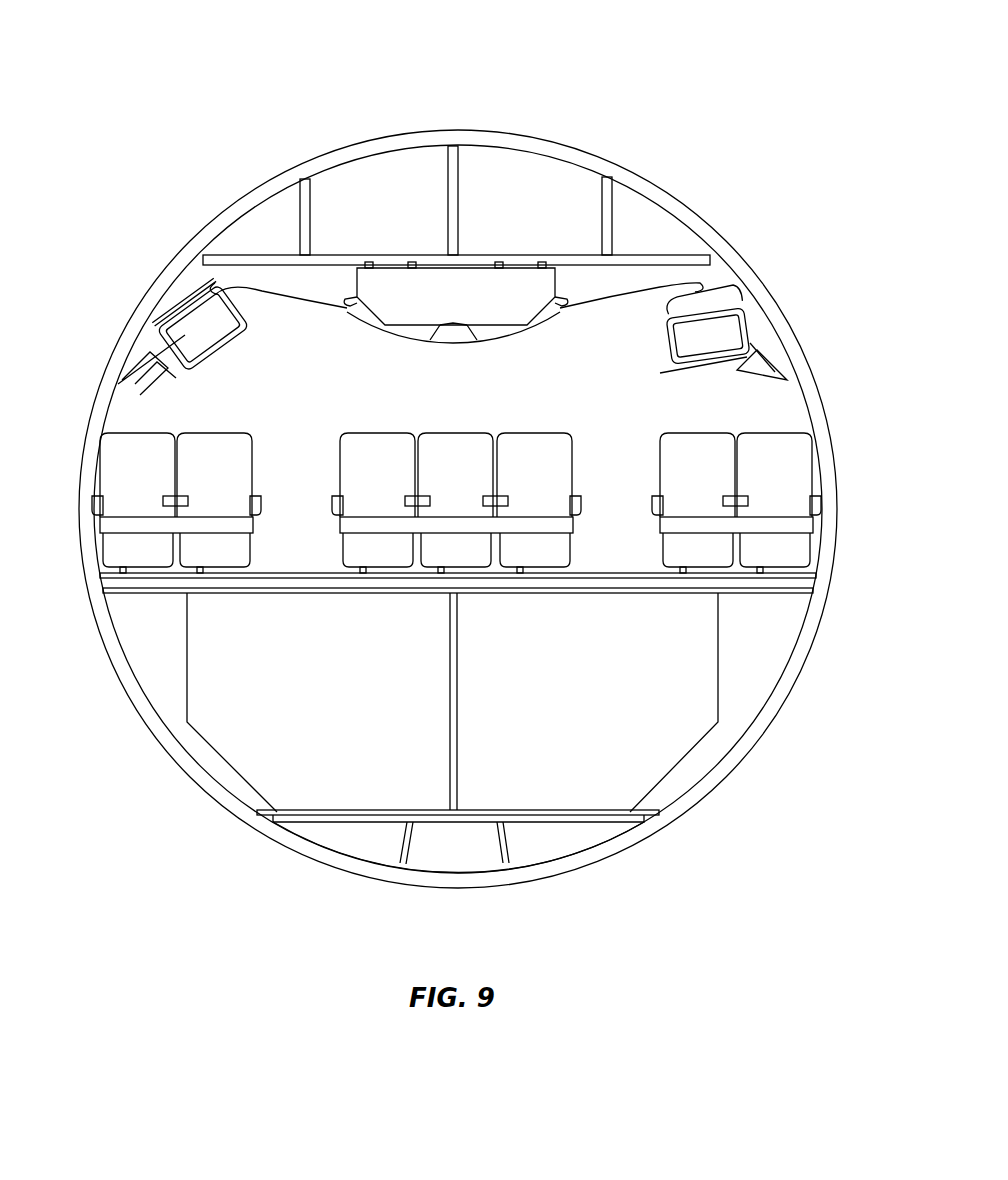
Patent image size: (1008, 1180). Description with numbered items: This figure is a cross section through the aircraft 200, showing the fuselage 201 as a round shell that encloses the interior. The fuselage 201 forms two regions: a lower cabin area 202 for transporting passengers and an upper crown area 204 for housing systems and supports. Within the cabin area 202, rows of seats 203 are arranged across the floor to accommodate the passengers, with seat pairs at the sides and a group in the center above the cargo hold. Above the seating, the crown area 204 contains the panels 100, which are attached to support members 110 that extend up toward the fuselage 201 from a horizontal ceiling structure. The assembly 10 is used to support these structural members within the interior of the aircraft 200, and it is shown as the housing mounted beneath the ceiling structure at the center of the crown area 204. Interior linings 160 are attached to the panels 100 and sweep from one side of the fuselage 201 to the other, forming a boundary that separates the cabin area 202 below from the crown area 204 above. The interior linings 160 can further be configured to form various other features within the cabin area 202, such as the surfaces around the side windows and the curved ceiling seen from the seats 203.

The aircraft 200 is at (462, 449).
The fuselage 201 is at (835, 540).
The cabin area 202 is at (314, 346).
The seats 203 is at (222, 456).
The crown area 204 is at (418, 147).
The support members 110 is at (355, 246).
The assembly 10 is at (526, 200).
The panel 100 is at (520, 296).
The interior lining 160 is at (620, 275).